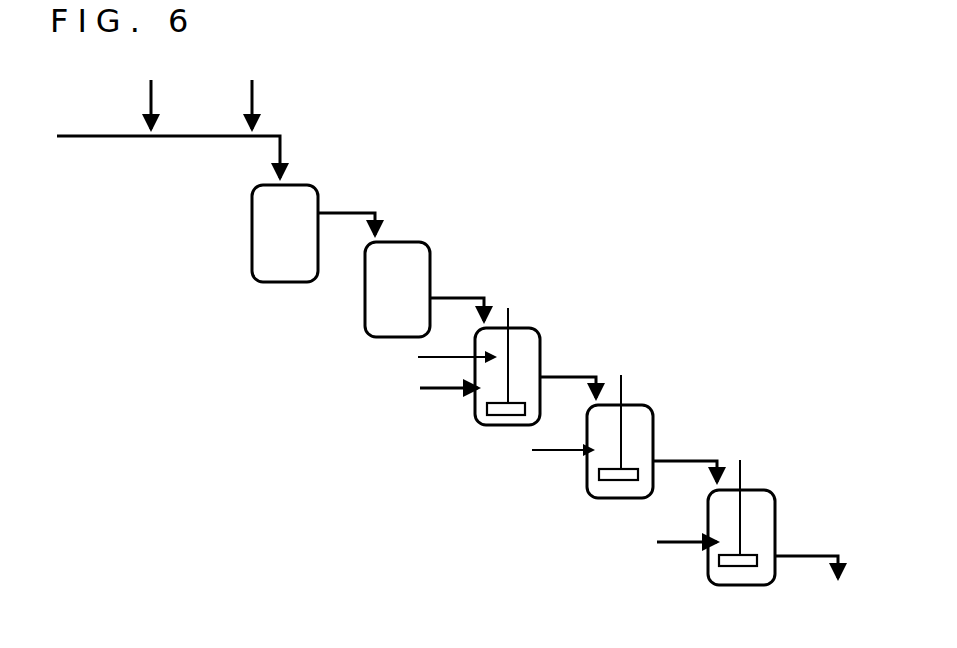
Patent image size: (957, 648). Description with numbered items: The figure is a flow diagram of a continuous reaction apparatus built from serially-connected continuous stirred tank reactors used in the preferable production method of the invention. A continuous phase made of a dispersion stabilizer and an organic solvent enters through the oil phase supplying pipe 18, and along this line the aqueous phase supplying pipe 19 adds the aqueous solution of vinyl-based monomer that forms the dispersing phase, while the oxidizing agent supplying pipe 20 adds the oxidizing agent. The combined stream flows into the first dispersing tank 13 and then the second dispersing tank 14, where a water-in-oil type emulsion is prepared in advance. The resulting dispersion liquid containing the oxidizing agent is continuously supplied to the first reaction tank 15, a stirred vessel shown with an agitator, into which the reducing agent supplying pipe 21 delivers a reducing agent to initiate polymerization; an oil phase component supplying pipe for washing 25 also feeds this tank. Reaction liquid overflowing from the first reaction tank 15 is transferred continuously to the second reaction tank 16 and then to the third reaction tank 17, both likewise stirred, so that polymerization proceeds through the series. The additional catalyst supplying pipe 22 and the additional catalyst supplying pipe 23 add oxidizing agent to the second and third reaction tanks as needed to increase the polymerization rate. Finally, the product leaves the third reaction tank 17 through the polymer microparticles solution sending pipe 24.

The first dispersing tank 13 is at (251, 252).
The second dispersing tank 14 is at (364, 302).
The first reaction tank 15 is at (474, 410).
The second reaction tank 16 is at (586, 471).
The third reaction tank 17 is at (707, 556).
The oil phase supplying pipe 18 is at (123, 137).
The aqueous phase supplying pipe 19 is at (150, 100).
The oxidizing agent supplying pipe 20 is at (251, 100).
The reducing agent supplying pipe 21 is at (435, 394).
The additional catalyst supplying pipe 22 is at (548, 454).
The additional catalyst supplying pipe 23 is at (663, 545).
The polymer microparticles solution sending pipe 24 is at (802, 550).
The oil phase component supplying pipe for washing 25 is at (445, 359).